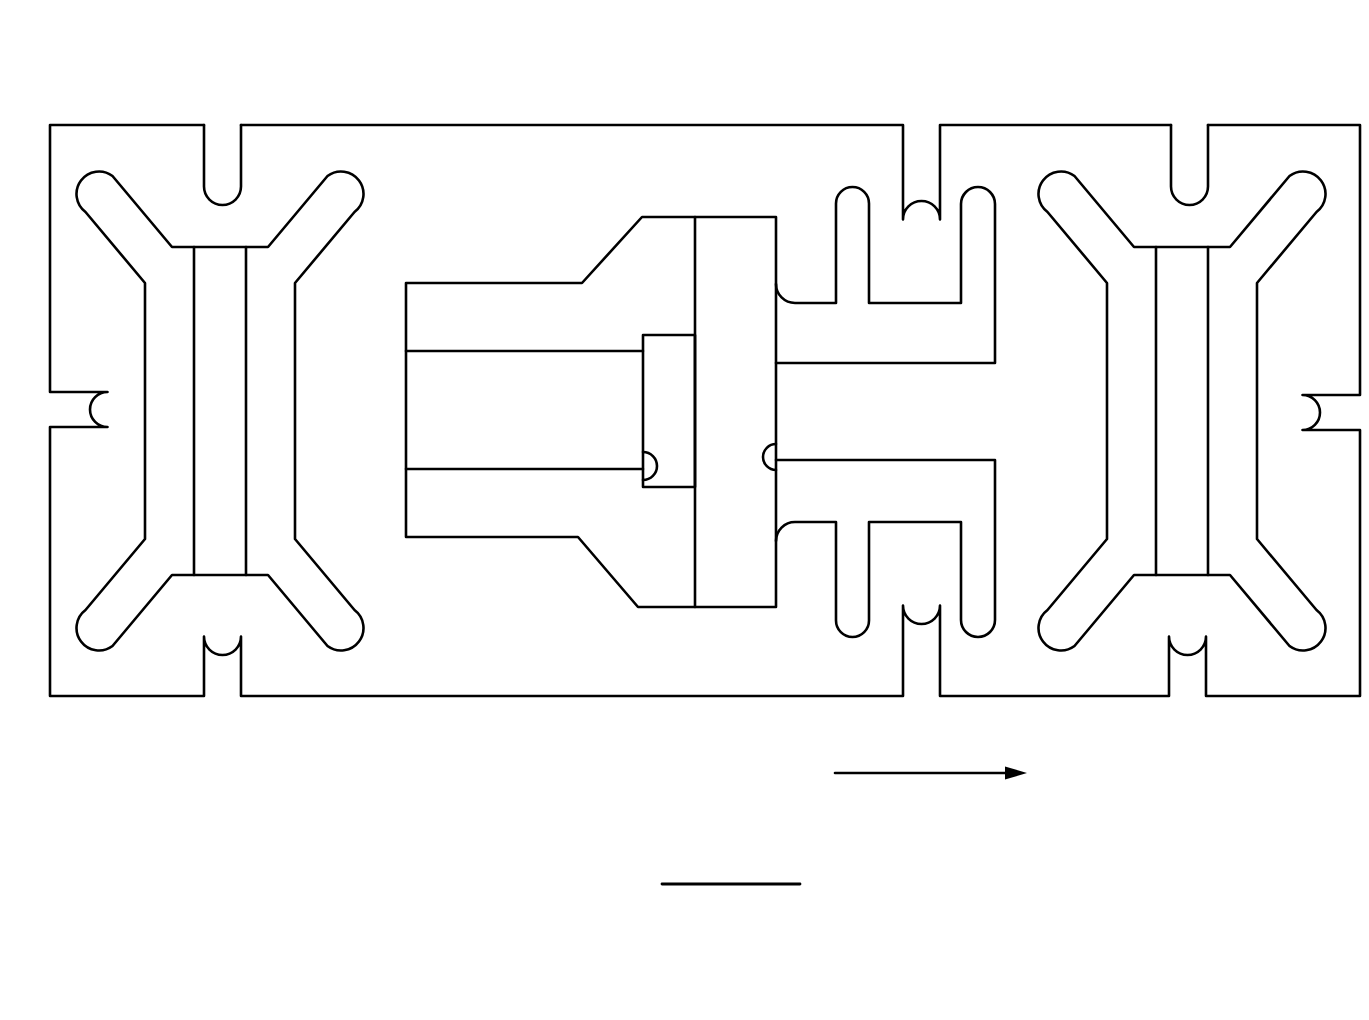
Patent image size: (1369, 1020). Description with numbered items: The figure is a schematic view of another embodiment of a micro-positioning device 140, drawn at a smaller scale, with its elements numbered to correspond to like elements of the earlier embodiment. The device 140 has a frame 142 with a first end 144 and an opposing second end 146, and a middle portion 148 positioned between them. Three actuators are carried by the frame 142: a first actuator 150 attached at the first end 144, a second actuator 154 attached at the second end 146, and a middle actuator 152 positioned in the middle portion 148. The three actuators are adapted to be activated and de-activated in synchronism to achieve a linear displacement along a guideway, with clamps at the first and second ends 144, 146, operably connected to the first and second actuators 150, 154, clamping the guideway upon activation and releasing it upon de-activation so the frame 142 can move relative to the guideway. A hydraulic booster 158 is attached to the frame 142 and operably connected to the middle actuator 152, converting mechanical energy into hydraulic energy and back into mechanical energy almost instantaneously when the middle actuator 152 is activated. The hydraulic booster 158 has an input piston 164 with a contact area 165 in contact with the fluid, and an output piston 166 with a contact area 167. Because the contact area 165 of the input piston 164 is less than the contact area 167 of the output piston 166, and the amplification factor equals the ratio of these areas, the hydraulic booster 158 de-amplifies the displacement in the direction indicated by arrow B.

The micro-positioning device 140 is at (815, 95).
The frame 142 is at (587, 114).
The first end 144 is at (257, 125).
The second end 146 is at (1220, 126).
The middle portion 148 is at (712, 125).
The first actuator 150 is at (248, 402).
The middle actuator 152 is at (480, 351).
The second actuator 154 is at (1208, 355).
The hydraulic booster 158 is at (680, 280).
The input piston 164 is at (643, 395).
The contact area 165 is at (643, 480).
The output piston 166 is at (777, 401).
The contact area 167 is at (777, 462).